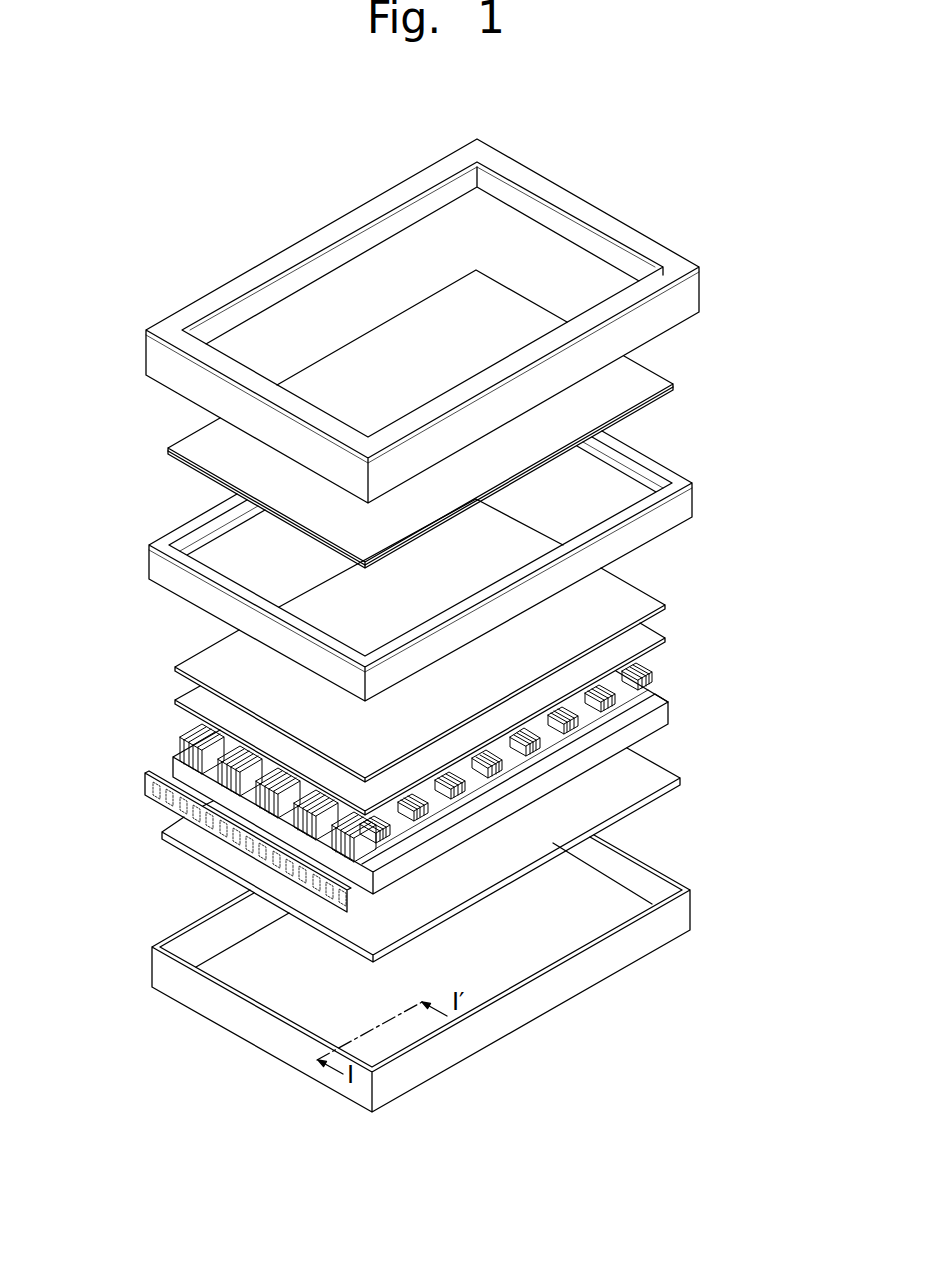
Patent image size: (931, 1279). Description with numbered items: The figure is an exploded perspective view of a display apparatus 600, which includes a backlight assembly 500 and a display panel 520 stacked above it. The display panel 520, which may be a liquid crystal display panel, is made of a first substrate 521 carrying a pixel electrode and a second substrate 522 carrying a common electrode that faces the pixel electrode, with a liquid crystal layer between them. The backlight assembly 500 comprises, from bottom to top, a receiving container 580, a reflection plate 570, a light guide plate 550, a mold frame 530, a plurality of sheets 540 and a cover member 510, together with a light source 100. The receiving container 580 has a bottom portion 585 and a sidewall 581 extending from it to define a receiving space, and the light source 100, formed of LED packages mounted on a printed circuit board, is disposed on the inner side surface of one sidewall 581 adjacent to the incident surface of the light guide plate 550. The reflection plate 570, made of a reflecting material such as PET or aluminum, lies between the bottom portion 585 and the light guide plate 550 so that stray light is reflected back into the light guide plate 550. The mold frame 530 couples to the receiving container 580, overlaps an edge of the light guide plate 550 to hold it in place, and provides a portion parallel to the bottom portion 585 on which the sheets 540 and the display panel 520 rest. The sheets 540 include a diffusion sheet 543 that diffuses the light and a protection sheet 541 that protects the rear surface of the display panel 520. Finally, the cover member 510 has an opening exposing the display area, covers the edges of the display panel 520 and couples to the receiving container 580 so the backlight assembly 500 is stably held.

The display apparatus 600 is at (593, 180).
The cover member 510 is at (689, 298).
The display panel 520 is at (755, 345).
The second substrate 522 is at (645, 378).
The first substrate 521 is at (672, 392).
The backlight assembly 500 is at (787, 495).
The mold frame 530 is at (683, 506).
The sheets 540 is at (737, 595).
The protection sheet 541 is at (648, 612).
The diffusion sheet 543 is at (648, 643).
The light guide plate 550 is at (657, 720).
The light source 100 is at (150, 782).
The reflection plate 570 is at (652, 772).
The receiving container 580 is at (607, 902).
The sidewall 581 is at (193, 944).
The bottom portion 585 is at (200, 955).